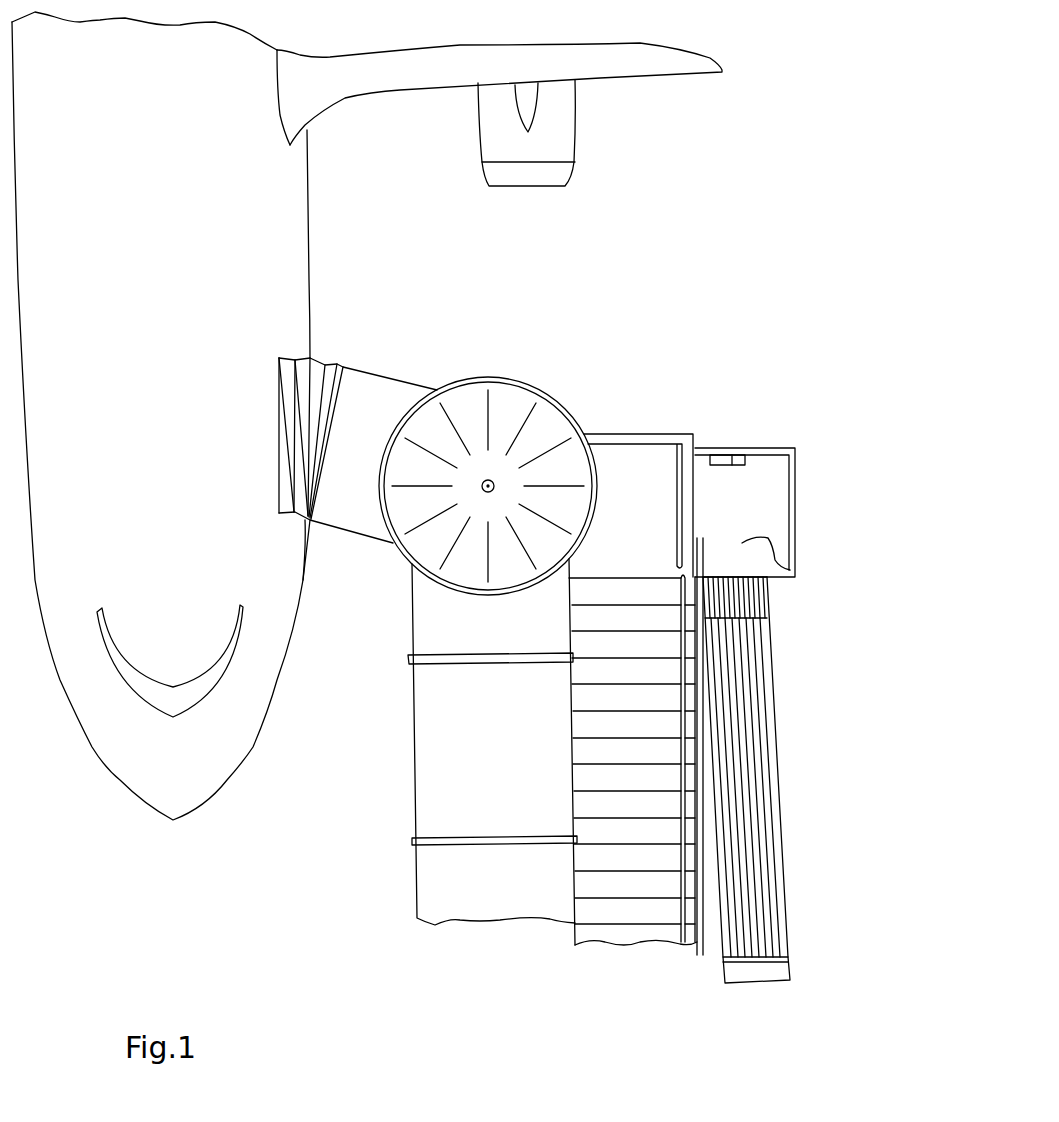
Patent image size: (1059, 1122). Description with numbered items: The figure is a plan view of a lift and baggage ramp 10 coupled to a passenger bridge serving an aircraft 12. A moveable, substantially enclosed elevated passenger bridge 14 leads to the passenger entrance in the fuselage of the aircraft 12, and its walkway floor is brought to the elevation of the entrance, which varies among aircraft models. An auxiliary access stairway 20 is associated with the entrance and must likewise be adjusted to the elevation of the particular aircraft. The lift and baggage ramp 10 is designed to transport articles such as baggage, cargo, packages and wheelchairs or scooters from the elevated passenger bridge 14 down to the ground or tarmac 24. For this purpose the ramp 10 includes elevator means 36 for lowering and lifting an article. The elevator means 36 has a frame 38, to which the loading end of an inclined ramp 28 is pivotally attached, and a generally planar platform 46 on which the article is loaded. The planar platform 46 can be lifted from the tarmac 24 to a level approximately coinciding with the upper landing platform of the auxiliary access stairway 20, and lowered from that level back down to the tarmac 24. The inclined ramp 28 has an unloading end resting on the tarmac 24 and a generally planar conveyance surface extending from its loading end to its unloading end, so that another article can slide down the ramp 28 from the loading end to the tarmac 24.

The lift and baggage ramp 10 is at (577, 658).
The aircraft 12 is at (112, 767).
The passenger bridge 14 is at (430, 625).
The auxiliary access stairway 20 is at (637, 930).
The tarmac 24 is at (345, 847).
The inclined ramp 28 is at (789, 708).
The elevator means 36 is at (810, 523).
The frame 38 is at (700, 435).
The planar platform 46 is at (790, 570).